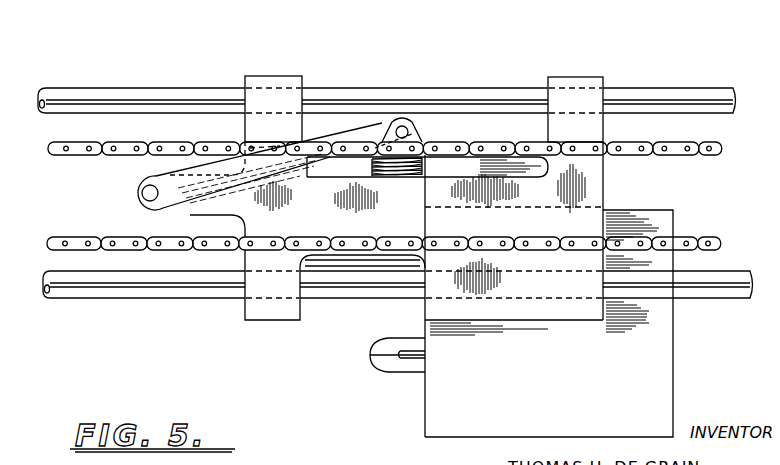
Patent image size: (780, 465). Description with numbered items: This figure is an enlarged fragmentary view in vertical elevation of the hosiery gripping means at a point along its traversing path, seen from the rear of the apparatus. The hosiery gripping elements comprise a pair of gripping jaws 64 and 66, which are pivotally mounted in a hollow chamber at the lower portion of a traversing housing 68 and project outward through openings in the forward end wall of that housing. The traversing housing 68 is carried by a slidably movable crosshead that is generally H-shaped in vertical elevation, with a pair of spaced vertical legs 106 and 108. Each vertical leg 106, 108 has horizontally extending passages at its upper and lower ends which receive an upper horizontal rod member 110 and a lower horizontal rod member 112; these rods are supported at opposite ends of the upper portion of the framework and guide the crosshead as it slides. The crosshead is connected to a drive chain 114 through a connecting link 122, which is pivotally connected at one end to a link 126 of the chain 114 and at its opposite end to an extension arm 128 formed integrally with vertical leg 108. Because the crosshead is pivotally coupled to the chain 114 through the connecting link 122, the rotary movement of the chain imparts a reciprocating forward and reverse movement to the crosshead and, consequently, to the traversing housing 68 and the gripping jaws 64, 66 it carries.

The gripping jaw 64 is at (377, 343).
The gripping jaw 66 is at (377, 368).
The traversing housing 68 is at (430, 415).
The vertical leg 106 is at (600, 86).
The vertical leg 108 is at (260, 318).
The upper horizontal rod member 110 is at (403, 91).
The lower horizontal rod member 112 is at (152, 298).
The drive chain 114 is at (481, 142).
The connecting link 122 is at (280, 173).
The link 126 is at (412, 138).
The extension arm 128 is at (193, 215).